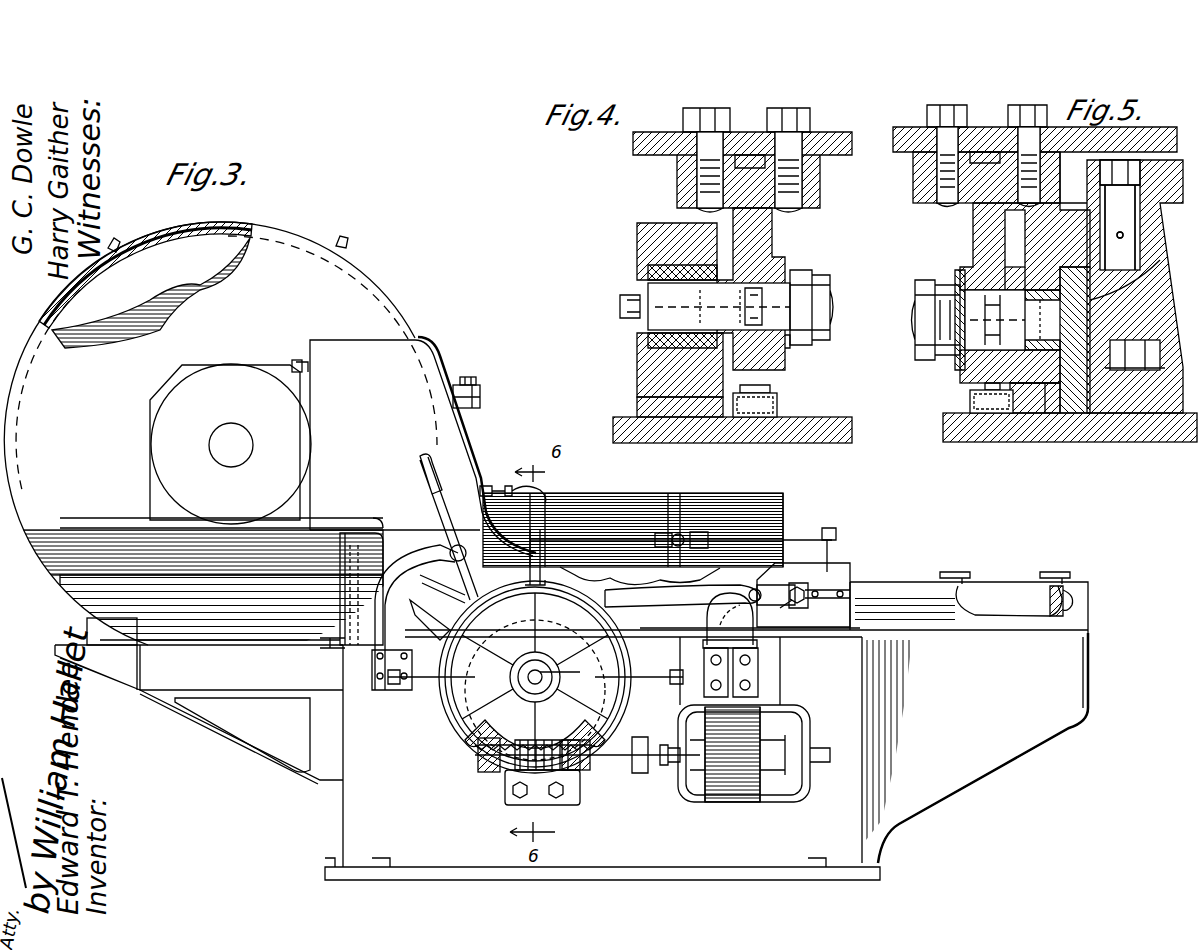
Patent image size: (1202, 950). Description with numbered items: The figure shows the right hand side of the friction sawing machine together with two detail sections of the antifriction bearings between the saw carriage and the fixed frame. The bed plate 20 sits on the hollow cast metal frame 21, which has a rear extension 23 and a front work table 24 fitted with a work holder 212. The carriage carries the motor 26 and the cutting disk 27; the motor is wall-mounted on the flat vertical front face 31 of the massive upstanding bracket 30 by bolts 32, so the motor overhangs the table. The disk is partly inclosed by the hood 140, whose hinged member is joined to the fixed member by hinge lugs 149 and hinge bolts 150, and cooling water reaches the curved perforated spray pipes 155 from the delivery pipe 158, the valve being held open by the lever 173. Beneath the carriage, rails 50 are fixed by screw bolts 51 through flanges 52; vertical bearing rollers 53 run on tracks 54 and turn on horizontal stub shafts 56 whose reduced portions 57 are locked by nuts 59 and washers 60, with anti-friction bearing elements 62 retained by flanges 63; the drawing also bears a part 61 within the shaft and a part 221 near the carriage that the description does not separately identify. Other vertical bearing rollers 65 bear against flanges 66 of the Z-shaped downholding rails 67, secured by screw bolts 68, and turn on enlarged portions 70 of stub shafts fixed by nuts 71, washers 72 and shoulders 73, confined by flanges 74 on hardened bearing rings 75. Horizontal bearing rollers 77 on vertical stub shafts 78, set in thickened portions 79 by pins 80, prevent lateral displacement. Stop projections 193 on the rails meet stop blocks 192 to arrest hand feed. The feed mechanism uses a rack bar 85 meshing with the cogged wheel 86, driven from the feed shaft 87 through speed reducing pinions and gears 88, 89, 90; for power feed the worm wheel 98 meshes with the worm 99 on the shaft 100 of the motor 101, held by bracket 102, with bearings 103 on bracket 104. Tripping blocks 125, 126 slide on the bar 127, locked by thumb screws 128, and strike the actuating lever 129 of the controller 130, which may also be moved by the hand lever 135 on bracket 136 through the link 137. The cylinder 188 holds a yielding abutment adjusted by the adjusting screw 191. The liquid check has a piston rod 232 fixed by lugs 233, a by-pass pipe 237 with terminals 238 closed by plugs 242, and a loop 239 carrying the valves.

In FIG. 4, the bed plate 20 is at (852, 430).
In FIG. 5, the bed plate 20 is at (1105, 440).
In FIG. 3, the hollow cast metal frame 21 is at (706, 755).
In FIG. 3, the extension 23 is at (972, 770).
In FIG. 3, the work table 24 is at (215, 728).
In FIG. 3, the motor 26 is at (222, 379).
In FIG. 3, the cutting disk 27 is at (144, 289).
In FIG. 3, the upstanding bracket 30 is at (400, 355).
In FIG. 3, the flat vertical front face 31 is at (296, 362).
In FIG. 3, the bolts 32 is at (295, 360).
In FIG. 4, the rails 50 is at (772, 228).
In FIG. 5, the rails 50 is at (975, 243).
In FIG. 4, the screw bolts 51 is at (795, 140).
In FIG. 5, the screw bolts 51 is at (1025, 128).
In FIG. 4, the flanges 52 is at (680, 192).
In FIG. 5, the flanges 52 is at (920, 185).
In FIG. 4, the vertical bearing rollers 53 is at (636, 370).
In FIG. 4, the tracks 54 is at (636, 402).
In FIG. 4, the horizontal stub shafts 56 is at (637, 285).
In FIG. 4, the reduced portions 57 is at (786, 287).
In FIG. 4, the nuts 59 is at (812, 278).
In FIG. 4, the washers 60 is at (790, 355).
In FIG. 4, the spindle body 61 is at (718, 286).
In FIG. 4, the anti-friction bearing elements 62 is at (660, 248).
In FIG. 4, the flanges 63 is at (637, 335).
In FIG. 5, the vertical bearing rollers 65 is at (1062, 400).
In FIG. 5, the flanges 66 is at (1013, 227).
In FIG. 3, the downholding rails 67 is at (920, 580).
In FIG. 5, the downholding rails 67 is at (1110, 310).
In FIG. 5, the screw bolts 68 is at (1138, 342).
In FIG. 5, the enlarged portions 70 is at (1035, 398).
In FIG. 5, the nuts 71 is at (915, 320).
In FIG. 5, the washers 72 is at (955, 275).
In FIG. 5, the shoulders 73 is at (1007, 320).
In FIG. 5, the flanges 74 is at (1055, 323).
In FIG. 5, the hardened bearing rings 75 is at (1005, 413).
In FIG. 3, the horizontal bearing rollers 77 is at (1048, 571).
In FIG. 5, the horizontal bearing rollers 77 is at (1125, 205).
In FIG. 5, the vertical stub shafts 78 is at (1125, 228).
In FIG. 5, the thickened portions 79 is at (1150, 265).
In FIG. 5, the pins 80 is at (1125, 245).
In FIG. 3, the rack bar 85 is at (550, 557).
In FIG. 3, the cogged wheel 86 is at (750, 615).
In FIG. 3, the feed shaft 87 is at (535, 727).
In FIG. 3, the speed reducing pinion 88 is at (535, 690).
In FIG. 3, the speed reducing gear 89 is at (605, 661).
In FIG. 3, the speed reducing gear 90 is at (535, 677).
In FIG. 3, the worm wheel 98 is at (565, 735).
In FIG. 3, the worm 99 is at (520, 760).
In FIG. 3, the motor shaft 100 is at (615, 752).
In FIG. 3, the motor 101 is at (730, 790).
In FIG. 3, the bracket 102 is at (775, 692).
In FIG. 3, the bearings 103 is at (495, 752).
In FIG. 3, the bracket 104 is at (570, 792).
In FIG. 3, the tripping block 125 is at (797, 583).
In FIG. 3, the tripping block 126 is at (425, 575).
In FIG. 3, the bar 127 is at (852, 573).
In FIG. 3, the thumb screws 128 is at (822, 582).
In FIG. 3, the actuating lever 129 is at (730, 619).
In FIG. 3, the controller 130 is at (760, 645).
In FIG. 3, the hand lever 135 is at (432, 470).
In FIG. 3, the bracket 136 is at (425, 575).
In FIG. 3, the link 137 is at (683, 585).
In FIG. 3, the hood 140 is at (354, 279).
In FIG. 3, the hinge lugs 149 is at (481, 403).
In FIG. 3, the hinge bolts 150 is at (466, 377).
In FIG. 3, the spray pipes 155 is at (243, 230).
In FIG. 3, the delivery pipe 158 is at (535, 490).
In FIG. 3, the lever 173 is at (488, 486).
In FIG. 3, the cylinder 188 is at (367, 616).
In FIG. 3, the adjusting screw 191 is at (335, 645).
In FIG. 4, the stop blocks 192 is at (780, 405).
In FIG. 5, the stop blocks 192 is at (970, 400).
In FIG. 4, the stop projections 193 is at (785, 393).
In FIG. 5, the stop projections 193 is at (990, 392).
In FIG. 3, the work holder 212 is at (78, 598).
In FIG. 3, the plate 221 is at (783, 530).
In FIG. 3, the piston rod 232 is at (1015, 590).
In FIG. 3, the lugs 233 is at (1078, 604).
In FIG. 3, the by-pass pipe 237 is at (590, 545).
In FIG. 3, the terminals 238 is at (832, 556).
In FIG. 3, the loop 239 is at (680, 538).
In FIG. 3, the plugs 242 is at (828, 528).